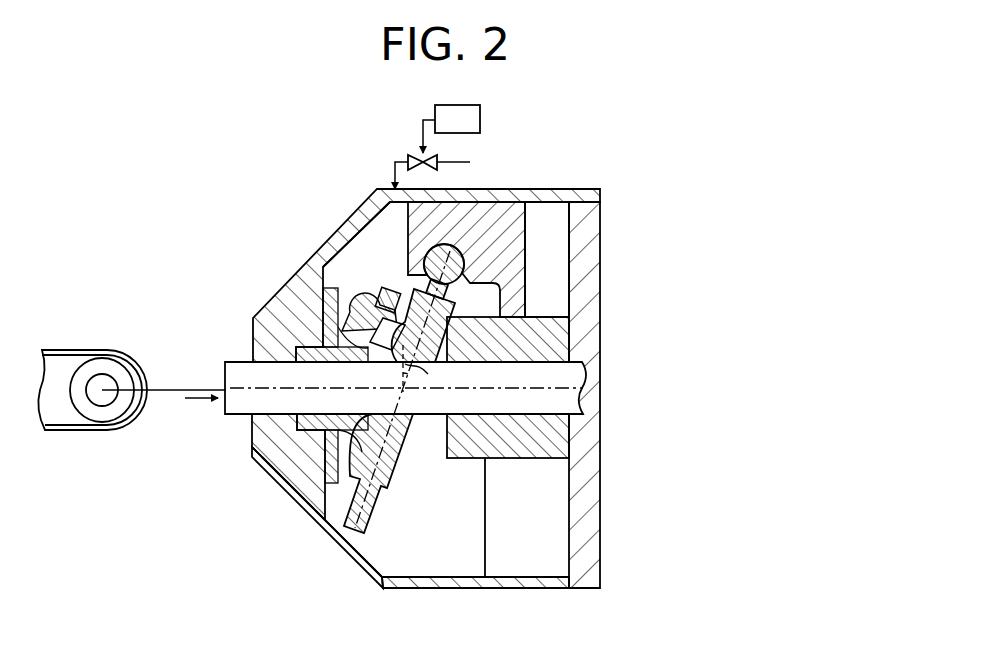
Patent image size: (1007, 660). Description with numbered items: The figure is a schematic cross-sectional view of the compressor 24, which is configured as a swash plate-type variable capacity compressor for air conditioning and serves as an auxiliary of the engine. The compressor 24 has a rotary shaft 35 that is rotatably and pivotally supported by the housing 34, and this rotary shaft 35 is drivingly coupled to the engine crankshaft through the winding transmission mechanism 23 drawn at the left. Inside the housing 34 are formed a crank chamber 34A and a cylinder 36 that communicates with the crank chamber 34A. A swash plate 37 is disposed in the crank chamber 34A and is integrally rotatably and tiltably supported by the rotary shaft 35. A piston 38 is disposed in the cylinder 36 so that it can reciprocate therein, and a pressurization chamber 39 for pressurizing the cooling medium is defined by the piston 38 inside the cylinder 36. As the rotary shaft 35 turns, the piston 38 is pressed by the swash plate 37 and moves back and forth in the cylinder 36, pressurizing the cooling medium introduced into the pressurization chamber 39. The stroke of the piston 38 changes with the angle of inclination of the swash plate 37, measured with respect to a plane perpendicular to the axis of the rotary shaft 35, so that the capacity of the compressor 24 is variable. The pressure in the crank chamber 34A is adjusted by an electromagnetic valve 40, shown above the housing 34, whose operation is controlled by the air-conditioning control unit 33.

The compressor 24 is at (261, 182).
The housing 34 is at (308, 268).
The crank chamber 34A is at (357, 252).
The cylinder 36 is at (545, 212).
The pressurization chamber 39 is at (550, 247).
The piston 38 is at (525, 290).
The rotary shaft 35 is at (238, 411).
The swash plate 37 is at (352, 503).
The winding transmission mechanism 23 is at (142, 367).
The electromagnetic valve 40 is at (412, 155).
The air-conditioning control unit 33 is at (480, 119).